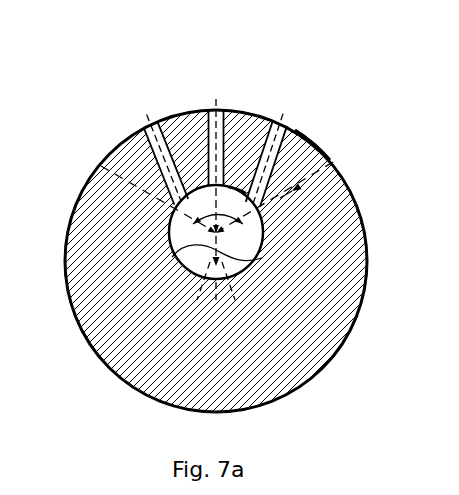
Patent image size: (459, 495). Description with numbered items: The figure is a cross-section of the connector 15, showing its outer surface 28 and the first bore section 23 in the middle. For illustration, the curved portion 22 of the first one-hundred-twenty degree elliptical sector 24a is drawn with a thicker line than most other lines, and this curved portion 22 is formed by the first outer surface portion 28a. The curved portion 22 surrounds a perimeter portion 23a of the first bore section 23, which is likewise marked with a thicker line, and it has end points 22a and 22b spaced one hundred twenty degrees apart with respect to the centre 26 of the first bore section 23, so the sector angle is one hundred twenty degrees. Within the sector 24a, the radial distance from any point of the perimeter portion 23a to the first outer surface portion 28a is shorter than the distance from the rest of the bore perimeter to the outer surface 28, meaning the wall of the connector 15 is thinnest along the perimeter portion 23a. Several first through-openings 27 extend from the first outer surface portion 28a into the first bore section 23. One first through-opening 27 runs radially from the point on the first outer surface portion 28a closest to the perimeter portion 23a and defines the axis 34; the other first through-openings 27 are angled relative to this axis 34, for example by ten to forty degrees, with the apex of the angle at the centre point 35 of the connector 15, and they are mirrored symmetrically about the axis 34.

The connector 15 is at (104, 77).
The curved portion 22 is at (172, 124).
The end point of curved portion 22a is at (100, 165).
The end point of curved portion 22b is at (331, 171).
The first bore section 23 is at (257, 234).
The perimeter portion 23a is at (235, 184).
The first 120 degree elliptical sector 24a is at (299, 187).
The centre of the first bore section 26 is at (206, 236).
The first through-opening 27 is at (143, 137).
The outer surface 28 is at (373, 287).
The first outer surface portion 28a is at (320, 140).
The axis 34 is at (216, 99).
The centre point of the connector 35 is at (222, 265).